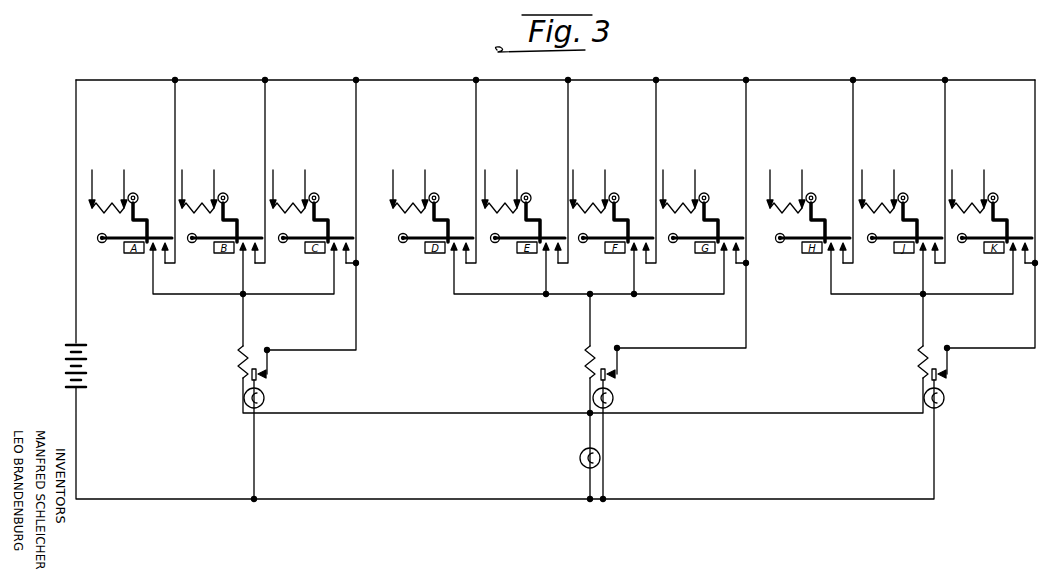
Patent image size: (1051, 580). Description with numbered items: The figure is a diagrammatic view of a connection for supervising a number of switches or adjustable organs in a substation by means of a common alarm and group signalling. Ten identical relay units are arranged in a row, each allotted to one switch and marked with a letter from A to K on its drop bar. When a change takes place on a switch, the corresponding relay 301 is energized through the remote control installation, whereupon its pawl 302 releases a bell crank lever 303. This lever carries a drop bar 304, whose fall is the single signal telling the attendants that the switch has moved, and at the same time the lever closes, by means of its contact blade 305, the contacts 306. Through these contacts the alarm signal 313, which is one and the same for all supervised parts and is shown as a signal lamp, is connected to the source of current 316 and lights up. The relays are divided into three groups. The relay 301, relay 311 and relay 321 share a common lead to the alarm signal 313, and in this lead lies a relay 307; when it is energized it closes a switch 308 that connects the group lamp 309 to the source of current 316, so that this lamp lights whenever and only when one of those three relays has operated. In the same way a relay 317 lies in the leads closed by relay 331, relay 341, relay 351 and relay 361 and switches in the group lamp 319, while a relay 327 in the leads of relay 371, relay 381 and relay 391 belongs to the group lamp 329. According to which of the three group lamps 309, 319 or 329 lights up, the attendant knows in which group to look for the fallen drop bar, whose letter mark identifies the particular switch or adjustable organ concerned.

The relay 301 is at (108, 191).
The pawl 302 is at (137, 201).
The bell crank lever 303 is at (144, 220).
The drop bar 304 is at (118, 244).
The contact blade 305 is at (172, 243).
The contacts 306 is at (150, 252).
The relay 311 is at (198, 191).
The relay 321 is at (289, 191).
The relay 331 is at (410, 206).
The relay 341 is at (500, 206).
The relay 351 is at (590, 206).
The relay 361 is at (680, 206).
The relay 371 is at (790, 206).
The relay 381 is at (880, 206).
The relay 391 is at (968, 206).
The source of current 316 is at (86, 368).
The relay 307 is at (238, 357).
The switch 308 is at (271, 371).
The group lamp 309 is at (264, 398).
The relay 317 is at (586, 351).
The group lamp 319 is at (613, 398).
The alarm signal 313 is at (580, 458).
The relay 327 is at (923, 362).
The group lamp 329 is at (944, 398).